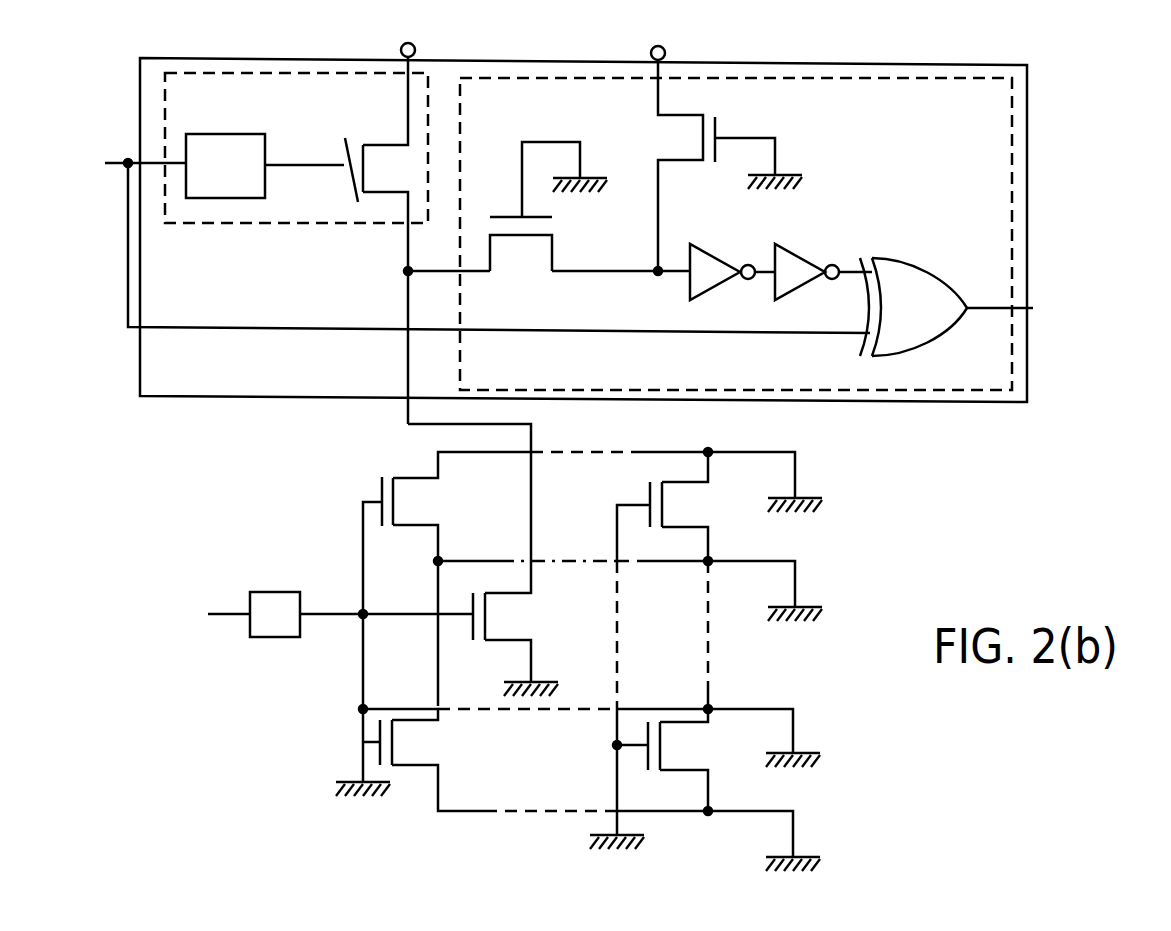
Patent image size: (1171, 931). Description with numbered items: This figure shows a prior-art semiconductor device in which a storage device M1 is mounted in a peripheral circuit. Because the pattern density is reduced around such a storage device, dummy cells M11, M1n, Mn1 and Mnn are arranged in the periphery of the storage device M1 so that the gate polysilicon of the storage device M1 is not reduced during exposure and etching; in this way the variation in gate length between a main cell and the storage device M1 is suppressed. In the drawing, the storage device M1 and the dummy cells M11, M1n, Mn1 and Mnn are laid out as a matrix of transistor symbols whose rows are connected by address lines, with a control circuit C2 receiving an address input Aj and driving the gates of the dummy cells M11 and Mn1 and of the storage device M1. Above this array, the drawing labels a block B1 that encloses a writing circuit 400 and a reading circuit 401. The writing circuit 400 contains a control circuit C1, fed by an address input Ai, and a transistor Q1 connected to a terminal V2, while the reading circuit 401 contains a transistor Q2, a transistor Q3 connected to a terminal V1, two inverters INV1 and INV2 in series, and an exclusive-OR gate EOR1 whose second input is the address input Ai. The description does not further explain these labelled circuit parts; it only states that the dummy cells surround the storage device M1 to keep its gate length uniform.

The writing circuit 400 is at (174, 72).
The reading circuit 401 is at (693, 77).
The block B1 is at (975, 65).
The voltage terminal V1 is at (675, 147).
The voltage terminal V2 is at (417, 49).
The transistor Q1 is at (338, 160).
The transistor Q2 is at (525, 236).
The transistor Q3 is at (720, 128).
The control circuit C1 is at (196, 200).
The control circuit C2 is at (253, 638).
The inverter INV1 is at (718, 258).
The inverter INV2 is at (803, 258).
The exclusive OR gate EOR1 is at (913, 262).
The dummy cell M11 is at (408, 506).
The dummy cell M1n is at (697, 510).
The storage device M1 is at (505, 622).
The dummy cell Mn1 is at (412, 748).
The dummy cell Mnn is at (707, 745).
The address input Ai is at (473, 242).
The address input Aj is at (211, 613).